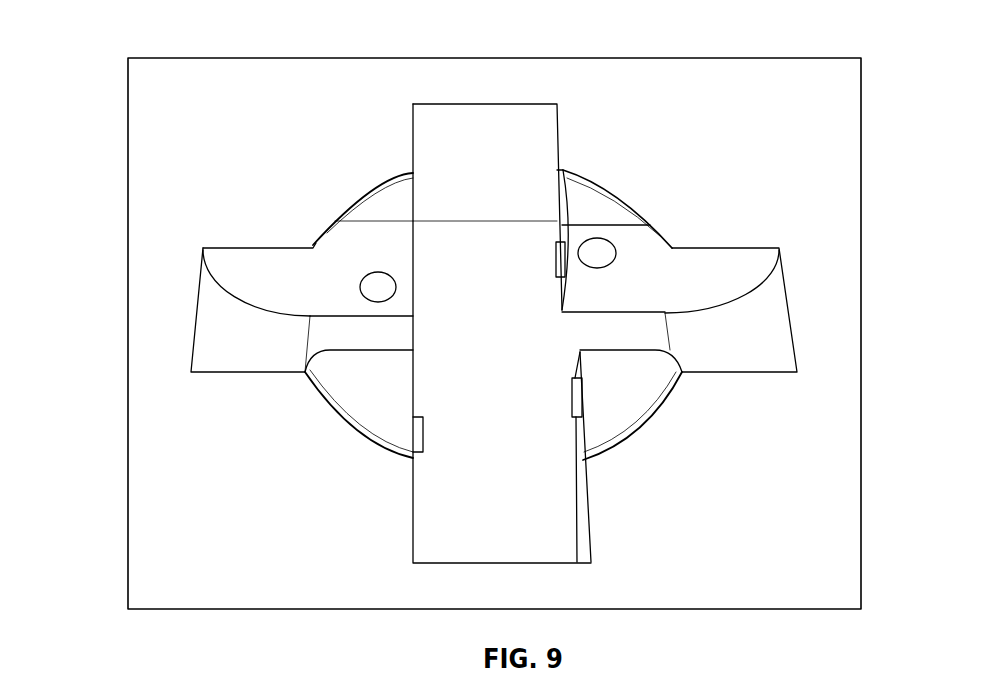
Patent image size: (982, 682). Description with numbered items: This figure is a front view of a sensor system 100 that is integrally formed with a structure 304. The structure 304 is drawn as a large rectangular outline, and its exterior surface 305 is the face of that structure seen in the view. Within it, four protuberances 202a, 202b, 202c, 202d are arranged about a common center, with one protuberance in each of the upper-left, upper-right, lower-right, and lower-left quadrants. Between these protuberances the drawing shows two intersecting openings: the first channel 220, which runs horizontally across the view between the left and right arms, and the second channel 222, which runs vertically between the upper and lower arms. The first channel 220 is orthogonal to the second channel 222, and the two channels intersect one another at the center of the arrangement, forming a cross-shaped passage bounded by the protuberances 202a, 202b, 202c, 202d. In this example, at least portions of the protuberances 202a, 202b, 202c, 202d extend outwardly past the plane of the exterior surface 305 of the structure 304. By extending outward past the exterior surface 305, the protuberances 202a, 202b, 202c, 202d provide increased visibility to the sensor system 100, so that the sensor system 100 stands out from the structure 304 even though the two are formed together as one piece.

The sensor system 100 is at (108, 270).
The protuberance 202a is at (374, 203).
The protuberance 202b is at (609, 198).
The protuberance 202c is at (648, 410).
The protuberance 202d is at (358, 410).
The first channel 220 is at (212, 333).
The second channel 222 is at (515, 148).
The structure 304 is at (815, 75).
The exterior surface 305 is at (836, 212).